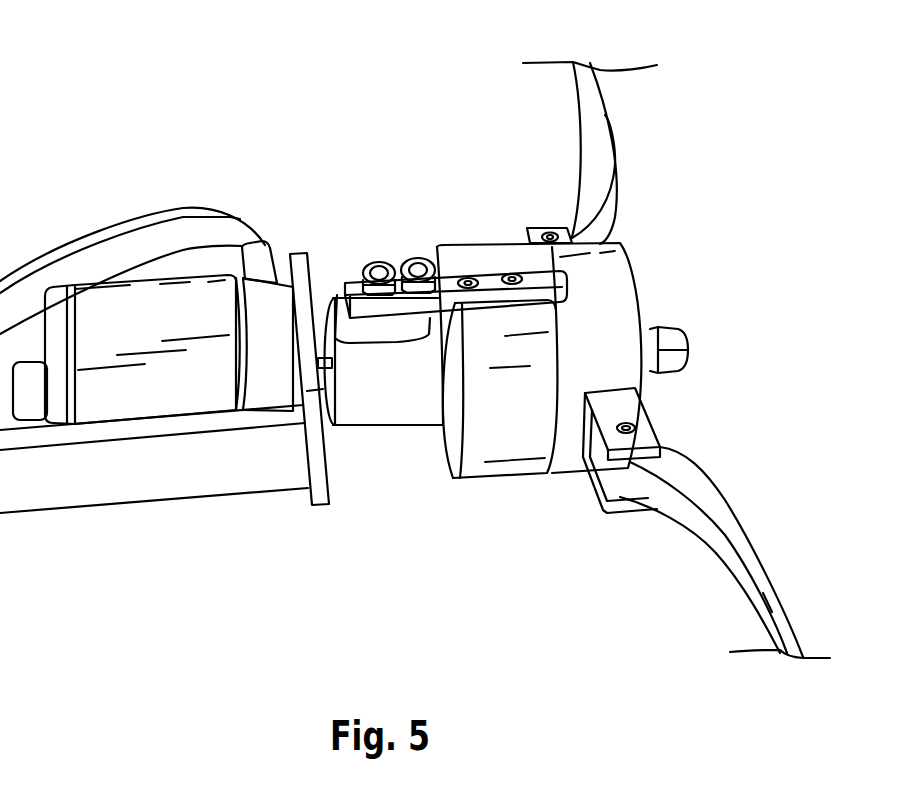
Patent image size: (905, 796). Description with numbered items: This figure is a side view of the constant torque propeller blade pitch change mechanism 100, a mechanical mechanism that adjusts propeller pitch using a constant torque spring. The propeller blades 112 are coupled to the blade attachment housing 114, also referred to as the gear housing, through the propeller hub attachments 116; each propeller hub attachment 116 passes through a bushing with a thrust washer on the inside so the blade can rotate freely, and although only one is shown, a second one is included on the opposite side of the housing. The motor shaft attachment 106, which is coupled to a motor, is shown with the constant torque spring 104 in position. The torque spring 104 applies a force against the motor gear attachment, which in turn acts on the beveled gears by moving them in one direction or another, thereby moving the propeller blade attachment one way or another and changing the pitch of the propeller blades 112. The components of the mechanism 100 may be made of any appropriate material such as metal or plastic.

The propeller blade pitch change mechanism 100 is at (141, 50).
The constant torque spring 104 is at (385, 417).
The motor shaft attachment 106 is at (346, 362).
The propeller blades 112 is at (702, 483).
The blade attachment housing 114 is at (622, 263).
The propeller hub attachment 116 is at (621, 400).